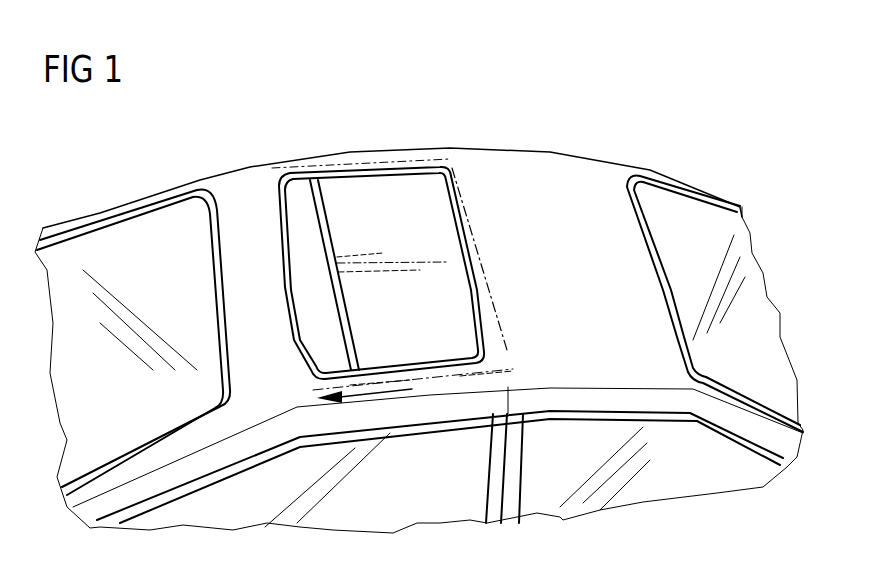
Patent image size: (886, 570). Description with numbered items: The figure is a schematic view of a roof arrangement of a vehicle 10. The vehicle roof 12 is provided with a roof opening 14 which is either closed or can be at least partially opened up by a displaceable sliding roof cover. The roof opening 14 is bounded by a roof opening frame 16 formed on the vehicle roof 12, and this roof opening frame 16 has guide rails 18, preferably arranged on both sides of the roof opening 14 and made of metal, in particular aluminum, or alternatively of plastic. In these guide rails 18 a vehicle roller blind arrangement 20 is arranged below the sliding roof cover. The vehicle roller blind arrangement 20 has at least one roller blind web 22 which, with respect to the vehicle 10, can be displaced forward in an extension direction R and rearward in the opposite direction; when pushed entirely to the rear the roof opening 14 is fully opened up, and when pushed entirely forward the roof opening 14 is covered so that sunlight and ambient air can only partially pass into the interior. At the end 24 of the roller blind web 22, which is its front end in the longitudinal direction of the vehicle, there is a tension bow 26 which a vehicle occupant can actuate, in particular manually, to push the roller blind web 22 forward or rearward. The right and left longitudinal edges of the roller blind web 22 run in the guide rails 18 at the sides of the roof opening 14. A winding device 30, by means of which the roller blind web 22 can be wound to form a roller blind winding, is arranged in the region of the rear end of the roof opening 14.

The vehicle 10 is at (725, 152).
The vehicle roof 12 is at (527, 163).
The roof opening 14 is at (320, 342).
The roof opening frame 16 is at (291, 302).
The guide rails 18 is at (363, 160).
The vehicle roller blind arrangement 20 is at (442, 133).
The roller blind web 22 is at (457, 300).
The end of the roller blind web 24 is at (342, 238).
The tension bow 26 is at (313, 212).
The winding device 30 is at (477, 240).
The extension direction R is at (373, 400).